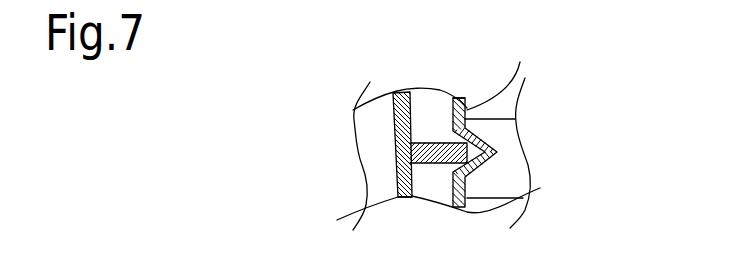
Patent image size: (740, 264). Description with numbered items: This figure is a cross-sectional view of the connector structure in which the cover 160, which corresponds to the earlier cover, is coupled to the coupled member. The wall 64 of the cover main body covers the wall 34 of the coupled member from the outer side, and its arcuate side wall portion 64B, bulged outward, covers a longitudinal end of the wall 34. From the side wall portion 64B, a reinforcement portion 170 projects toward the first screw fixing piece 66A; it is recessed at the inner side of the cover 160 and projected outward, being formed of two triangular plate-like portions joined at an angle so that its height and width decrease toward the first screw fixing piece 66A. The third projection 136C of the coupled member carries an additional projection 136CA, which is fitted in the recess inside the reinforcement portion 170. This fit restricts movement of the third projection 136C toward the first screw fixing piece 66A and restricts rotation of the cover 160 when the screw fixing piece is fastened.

The wall 34 is at (412, 180).
The wall 64 is at (393, 118).
The side wall portion 64B is at (509, 71).
The first screw fixing piece 66A is at (503, 135).
The third projection 136C is at (431, 135).
The additional projection 136CA is at (474, 159).
The cover 160 is at (472, 103).
The reinforcement portion 170 is at (498, 155).